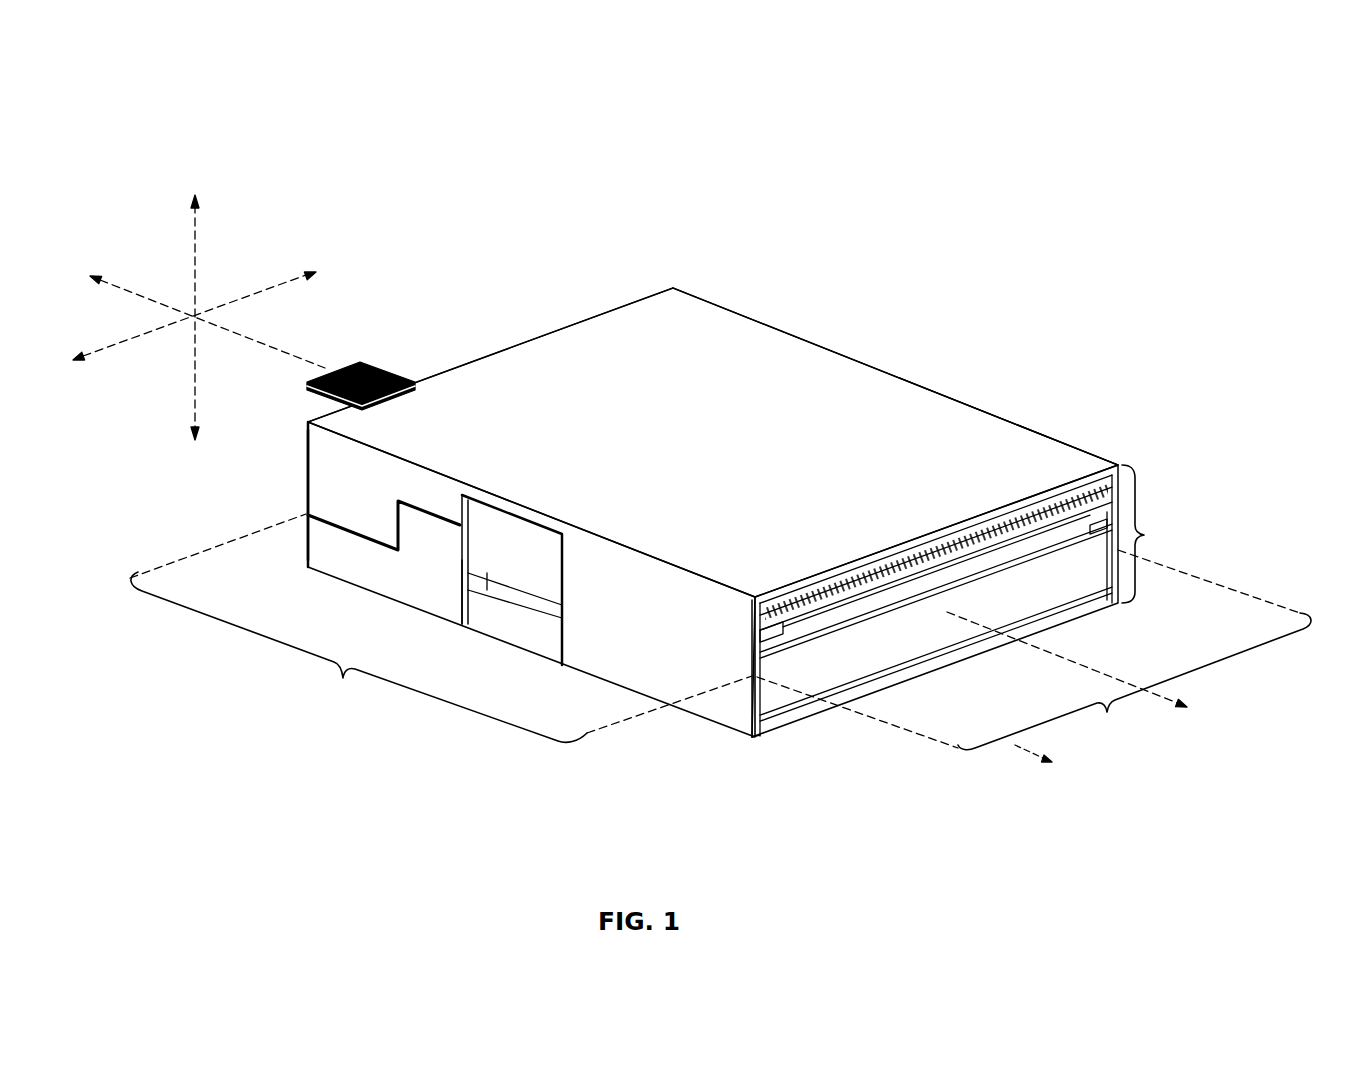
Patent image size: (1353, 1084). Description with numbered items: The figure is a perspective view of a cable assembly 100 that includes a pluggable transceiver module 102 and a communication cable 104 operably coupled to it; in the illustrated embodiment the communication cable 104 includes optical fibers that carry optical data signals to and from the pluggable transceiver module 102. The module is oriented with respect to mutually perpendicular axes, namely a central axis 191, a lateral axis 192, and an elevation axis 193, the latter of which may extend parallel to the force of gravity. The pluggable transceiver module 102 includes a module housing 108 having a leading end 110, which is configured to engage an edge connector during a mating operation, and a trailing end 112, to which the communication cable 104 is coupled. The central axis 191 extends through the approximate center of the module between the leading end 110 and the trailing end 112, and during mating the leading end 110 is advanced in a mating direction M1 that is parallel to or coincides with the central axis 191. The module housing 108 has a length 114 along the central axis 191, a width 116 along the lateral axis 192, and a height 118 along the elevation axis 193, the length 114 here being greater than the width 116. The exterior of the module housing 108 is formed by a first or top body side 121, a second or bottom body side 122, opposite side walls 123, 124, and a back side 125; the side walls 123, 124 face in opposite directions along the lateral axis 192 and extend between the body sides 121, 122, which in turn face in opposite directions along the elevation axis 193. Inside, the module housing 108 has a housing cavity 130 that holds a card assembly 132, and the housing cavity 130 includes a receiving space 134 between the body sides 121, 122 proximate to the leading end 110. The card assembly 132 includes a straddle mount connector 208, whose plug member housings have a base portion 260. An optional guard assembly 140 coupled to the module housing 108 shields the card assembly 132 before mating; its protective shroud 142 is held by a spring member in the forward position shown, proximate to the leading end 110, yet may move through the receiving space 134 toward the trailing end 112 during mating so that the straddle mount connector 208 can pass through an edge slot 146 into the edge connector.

The cable assembly 100 is at (906, 120).
The pluggable transceiver module 102 is at (906, 298).
The communication cable 104 is at (384, 350).
The module housing 108 is at (697, 345).
The leading end 110 is at (1078, 596).
The trailing end 112 is at (502, 306).
The length 114 is at (358, 628).
The width 116 is at (949, 650).
The height 118 is at (1159, 534).
The first body side 121 is at (920, 457).
The second body side 122 is at (528, 645).
The side wall 123 is at (415, 565).
The side wall 124 is at (1007, 420).
The back side 125 is at (307, 486).
The housing cavity 130 is at (915, 606).
The card assembly 132 is at (987, 563).
The receiving space 134 is at (879, 628).
The guard assembly 140 is at (766, 696).
The protective shroud 142 is at (816, 670).
The edge slot 146 is at (967, 555).
The central axis 191 is at (137, 295).
The lateral axis 192 is at (233, 298).
The elevation axis 193 is at (195, 233).
The straddle mount connector 208 is at (953, 568).
The base portion 260 is at (472, 618).
The mating direction M1 is at (1022, 750).